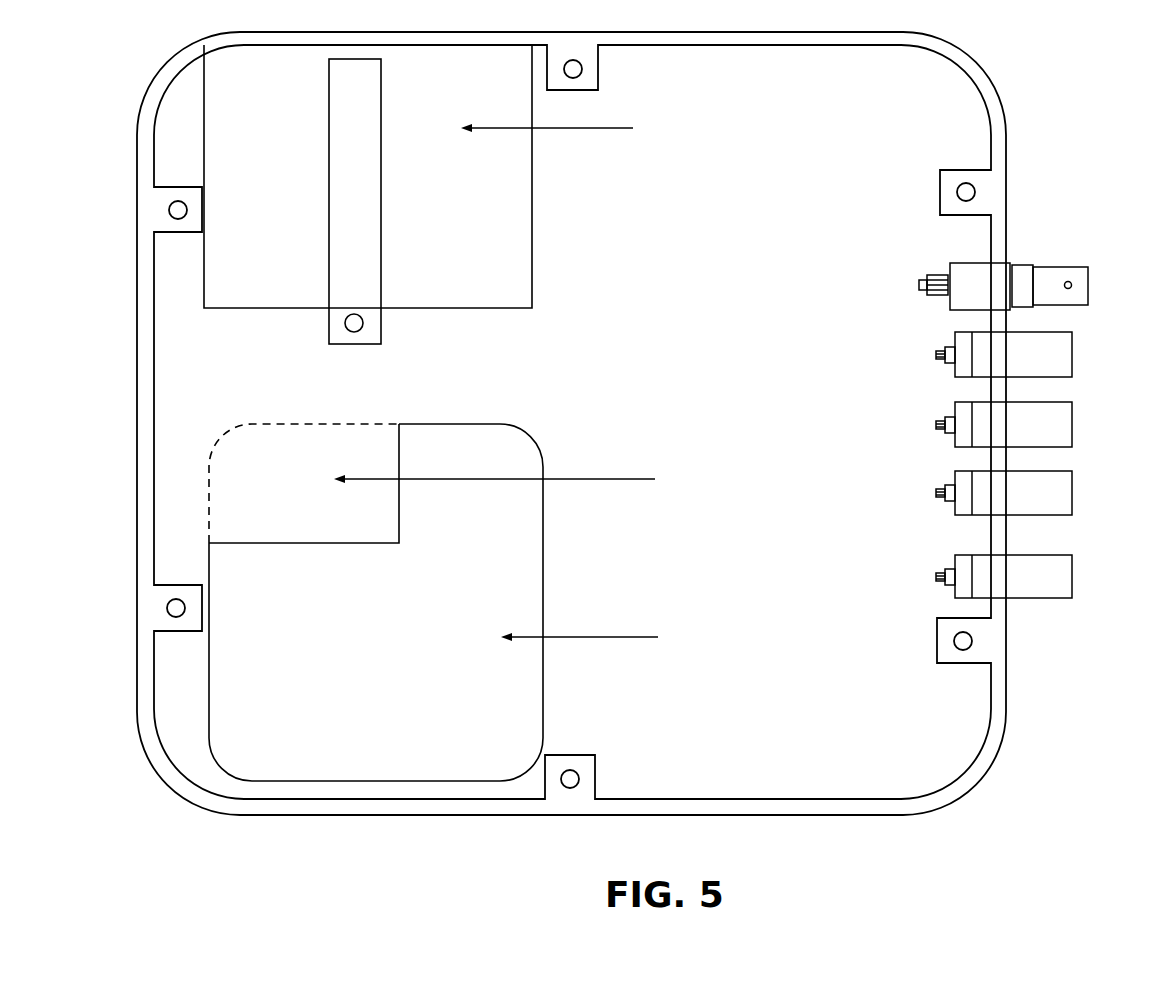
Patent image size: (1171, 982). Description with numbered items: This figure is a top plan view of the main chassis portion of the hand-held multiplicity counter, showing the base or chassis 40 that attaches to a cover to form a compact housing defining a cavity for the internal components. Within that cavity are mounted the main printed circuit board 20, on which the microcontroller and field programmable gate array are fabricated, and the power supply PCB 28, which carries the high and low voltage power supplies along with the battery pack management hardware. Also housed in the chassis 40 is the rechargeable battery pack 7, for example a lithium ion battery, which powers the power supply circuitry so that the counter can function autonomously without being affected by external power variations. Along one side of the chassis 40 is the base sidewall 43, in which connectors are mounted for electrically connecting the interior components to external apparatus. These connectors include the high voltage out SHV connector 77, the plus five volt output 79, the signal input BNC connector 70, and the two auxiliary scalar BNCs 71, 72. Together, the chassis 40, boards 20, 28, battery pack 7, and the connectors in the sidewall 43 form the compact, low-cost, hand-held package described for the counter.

The base or chassis 40 is at (599, 422).
The base sidewall 43 is at (1006, 135).
The battery pack 7 is at (532, 238).
The power supply PCB 28 is at (390, 423).
The main printed circuit board 20 is at (543, 703).
The high voltage out SHV connector 77 is at (1088, 290).
The +5V output 79 is at (1072, 355).
The signal input BNC connector 70 is at (1072, 425).
The auxiliary scalar BNC 71 is at (1072, 493).
The auxiliary scalar BNC 72 is at (1072, 578).